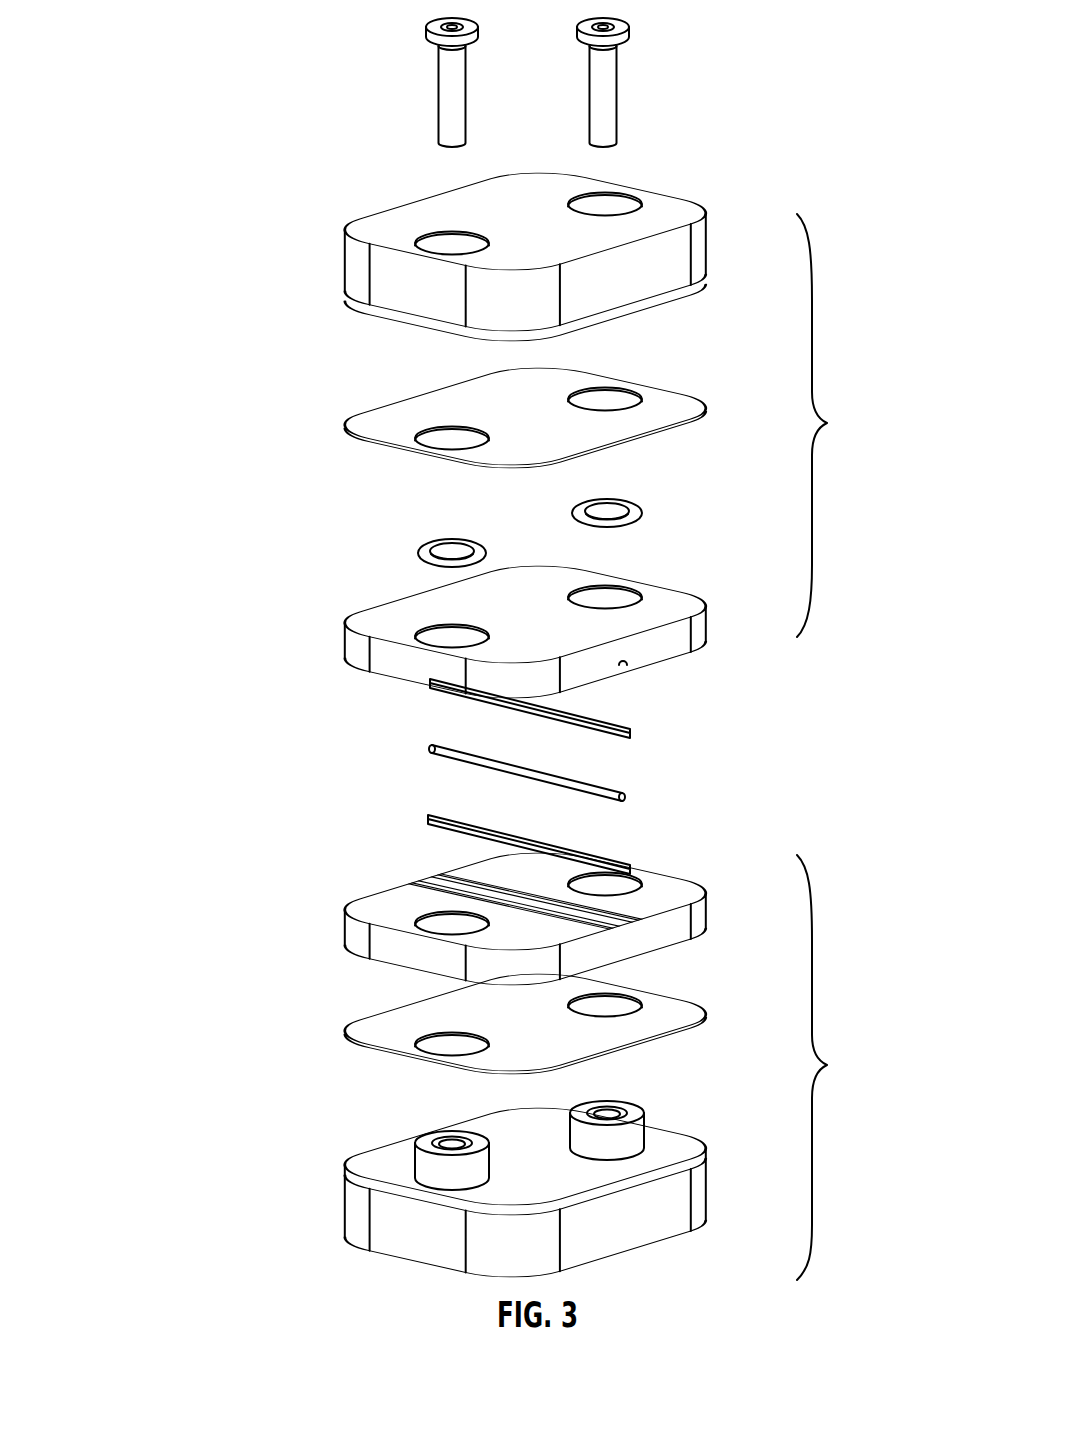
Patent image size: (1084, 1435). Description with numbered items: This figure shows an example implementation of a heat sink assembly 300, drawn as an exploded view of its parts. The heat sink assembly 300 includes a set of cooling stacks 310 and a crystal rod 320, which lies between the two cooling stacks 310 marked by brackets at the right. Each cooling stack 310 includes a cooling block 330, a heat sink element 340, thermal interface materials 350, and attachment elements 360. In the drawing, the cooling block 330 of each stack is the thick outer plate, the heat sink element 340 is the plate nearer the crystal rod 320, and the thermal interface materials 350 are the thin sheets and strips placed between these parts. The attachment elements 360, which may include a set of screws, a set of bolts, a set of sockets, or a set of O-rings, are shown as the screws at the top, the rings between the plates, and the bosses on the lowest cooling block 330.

The heat sink assembly 300 is at (162, 36).
The cooling stack 310 is at (827, 423).
The crystal rod 320 is at (432, 748).
The cooling block 330 is at (348, 262).
The heat sink element 340 is at (348, 634).
The thermal interface material 350 is at (350, 425).
The attachment element 360 is at (438, 93).